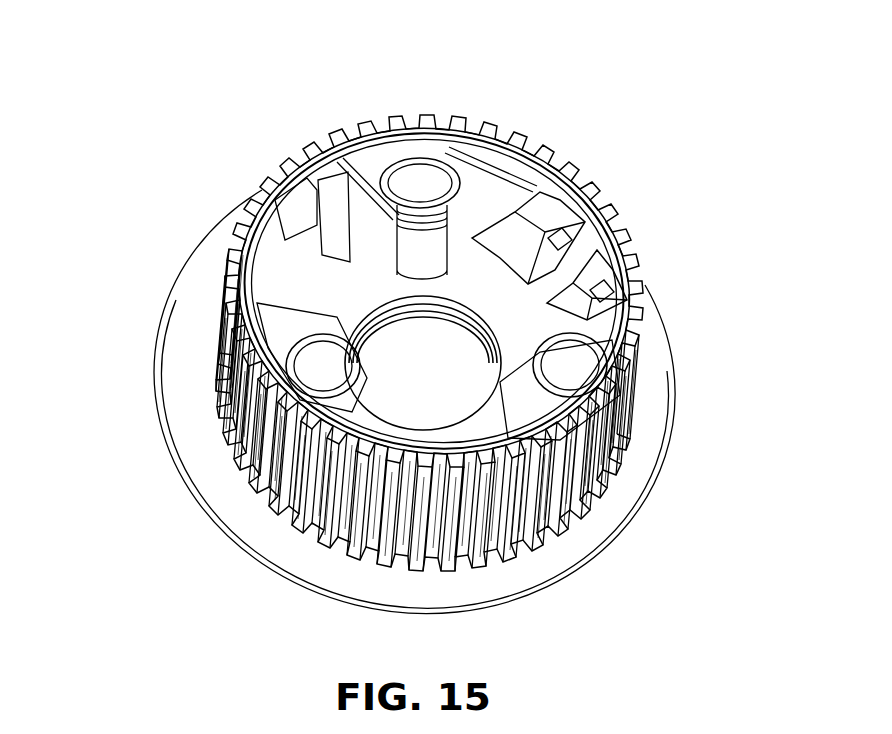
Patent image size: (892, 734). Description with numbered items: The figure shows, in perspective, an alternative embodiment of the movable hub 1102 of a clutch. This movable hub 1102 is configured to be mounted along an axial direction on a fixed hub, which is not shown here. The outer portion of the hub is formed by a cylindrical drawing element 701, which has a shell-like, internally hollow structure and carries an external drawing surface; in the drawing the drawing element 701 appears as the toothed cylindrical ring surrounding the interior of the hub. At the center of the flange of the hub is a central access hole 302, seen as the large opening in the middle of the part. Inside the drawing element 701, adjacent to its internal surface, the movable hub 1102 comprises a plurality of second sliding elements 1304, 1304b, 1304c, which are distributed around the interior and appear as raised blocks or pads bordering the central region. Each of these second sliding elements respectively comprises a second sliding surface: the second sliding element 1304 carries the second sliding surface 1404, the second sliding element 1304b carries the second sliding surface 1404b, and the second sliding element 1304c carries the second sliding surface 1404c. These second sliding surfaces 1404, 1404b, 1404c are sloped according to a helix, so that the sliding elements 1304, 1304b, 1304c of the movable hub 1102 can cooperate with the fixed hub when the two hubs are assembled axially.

The movable hub 1102 is at (210, 102).
The cylindrical drawing element 701 is at (632, 423).
The central access hole 302 is at (427, 380).
The second sliding element 1304 is at (488, 178).
The second sliding surface 1404 is at (542, 240).
The second sliding element 1304b is at (503, 208).
The second sliding surface 1404b is at (558, 255).
The second sliding element 1304c is at (582, 285).
The second sliding surface 1404c is at (596, 306).